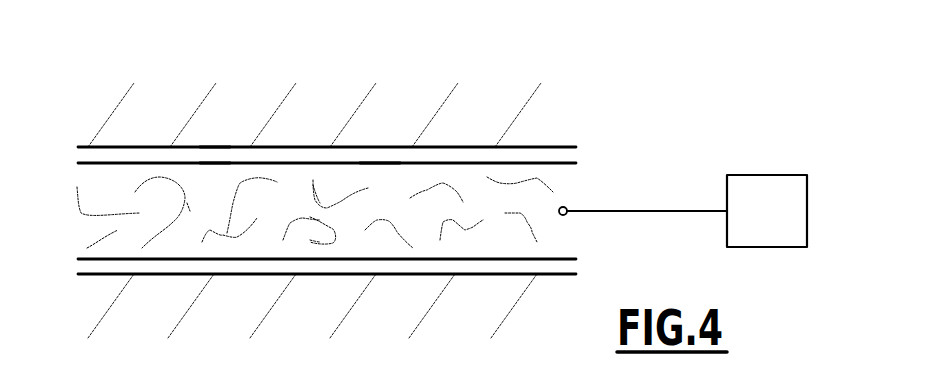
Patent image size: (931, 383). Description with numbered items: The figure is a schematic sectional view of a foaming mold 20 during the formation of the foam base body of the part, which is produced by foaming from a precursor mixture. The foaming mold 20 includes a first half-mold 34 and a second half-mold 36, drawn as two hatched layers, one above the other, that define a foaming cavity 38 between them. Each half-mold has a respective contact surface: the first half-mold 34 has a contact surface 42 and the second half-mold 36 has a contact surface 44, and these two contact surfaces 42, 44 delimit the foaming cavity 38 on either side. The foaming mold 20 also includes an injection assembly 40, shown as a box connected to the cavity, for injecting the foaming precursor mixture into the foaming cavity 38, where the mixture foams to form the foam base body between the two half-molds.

The foaming mold 20 is at (604, 105).
The first half-mold 34 is at (138, 306).
The second half-mold 36 is at (113, 125).
The foaming cavity 38 is at (215, 177).
The injection assembly 40 is at (766, 175).
The contact surface 42 is at (353, 276).
The contact surface 44 is at (385, 172).